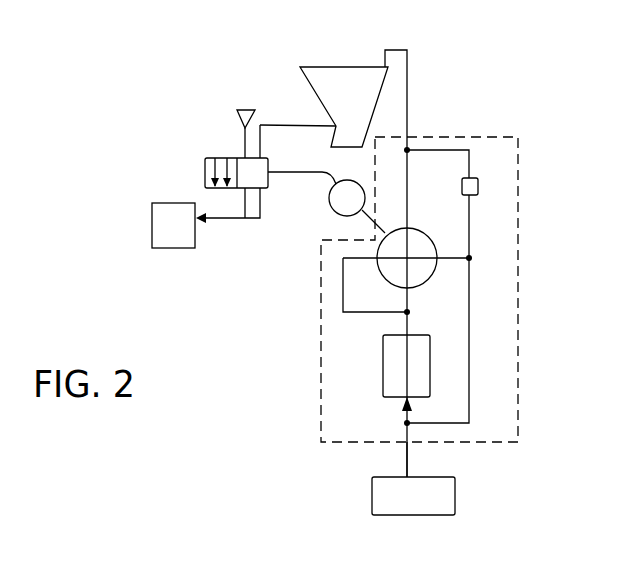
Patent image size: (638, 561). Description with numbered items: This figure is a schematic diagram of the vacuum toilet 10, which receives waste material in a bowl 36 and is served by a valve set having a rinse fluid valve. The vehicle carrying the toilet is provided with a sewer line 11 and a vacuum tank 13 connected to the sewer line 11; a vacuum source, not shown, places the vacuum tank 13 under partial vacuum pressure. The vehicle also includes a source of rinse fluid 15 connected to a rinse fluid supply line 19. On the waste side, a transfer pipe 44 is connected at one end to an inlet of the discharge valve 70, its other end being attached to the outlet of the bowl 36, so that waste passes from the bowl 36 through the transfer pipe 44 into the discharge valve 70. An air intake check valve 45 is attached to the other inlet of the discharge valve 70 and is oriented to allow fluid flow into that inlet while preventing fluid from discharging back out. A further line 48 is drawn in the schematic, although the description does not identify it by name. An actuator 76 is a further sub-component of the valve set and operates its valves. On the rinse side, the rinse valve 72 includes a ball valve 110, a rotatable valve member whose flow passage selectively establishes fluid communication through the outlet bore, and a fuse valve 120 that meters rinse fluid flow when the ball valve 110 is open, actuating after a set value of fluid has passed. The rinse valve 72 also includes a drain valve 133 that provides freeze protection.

The vacuum toilet 10 is at (246, 70).
The bowl 36 is at (330, 67).
The transfer pipe 44 is at (295, 95).
The air intake check valve 45 is at (245, 137).
The supply line 48 is at (409, 110).
The discharge valve 70 is at (205, 165).
The actuator 76 is at (330, 198).
The sewer line 11 is at (223, 219).
The vacuum tank 13 is at (172, 249).
The ball valve 110 is at (421, 240).
The fuse valve 120 is at (393, 373).
The drain valve 133 is at (478, 187).
The rinse valve 72 is at (320, 423).
The rinse fluid supply line 19 is at (406, 457).
The source of rinse fluid 15 is at (378, 503).